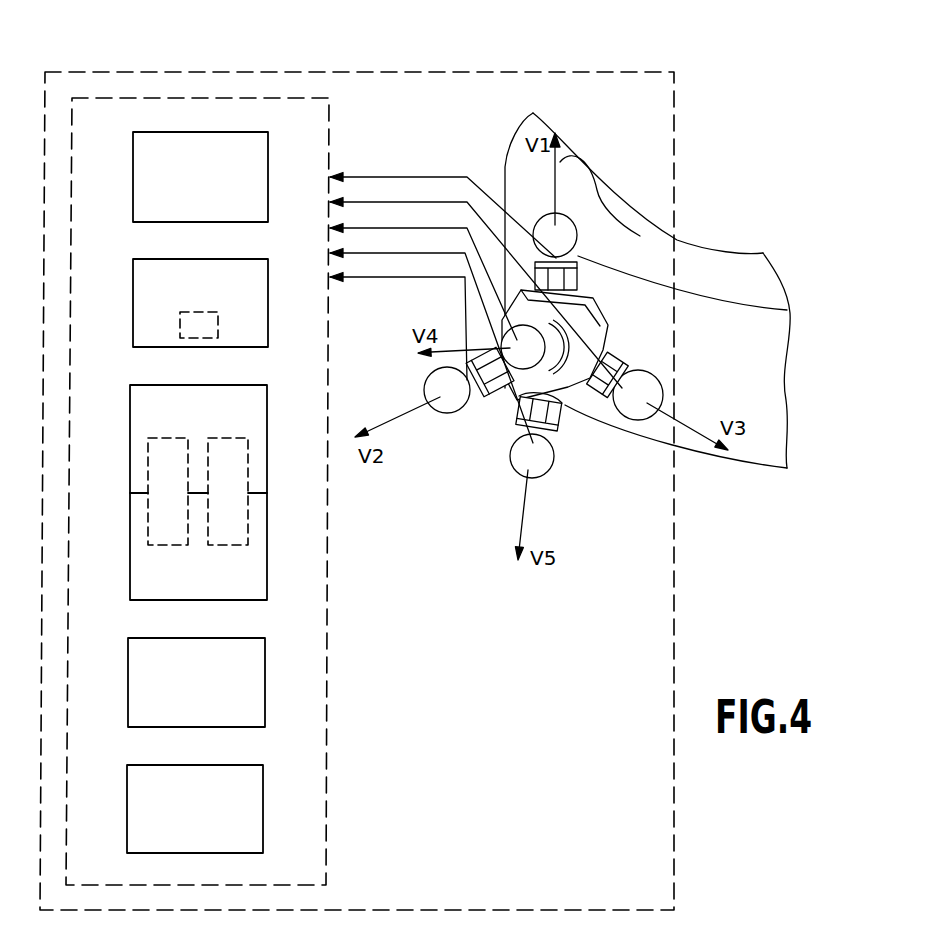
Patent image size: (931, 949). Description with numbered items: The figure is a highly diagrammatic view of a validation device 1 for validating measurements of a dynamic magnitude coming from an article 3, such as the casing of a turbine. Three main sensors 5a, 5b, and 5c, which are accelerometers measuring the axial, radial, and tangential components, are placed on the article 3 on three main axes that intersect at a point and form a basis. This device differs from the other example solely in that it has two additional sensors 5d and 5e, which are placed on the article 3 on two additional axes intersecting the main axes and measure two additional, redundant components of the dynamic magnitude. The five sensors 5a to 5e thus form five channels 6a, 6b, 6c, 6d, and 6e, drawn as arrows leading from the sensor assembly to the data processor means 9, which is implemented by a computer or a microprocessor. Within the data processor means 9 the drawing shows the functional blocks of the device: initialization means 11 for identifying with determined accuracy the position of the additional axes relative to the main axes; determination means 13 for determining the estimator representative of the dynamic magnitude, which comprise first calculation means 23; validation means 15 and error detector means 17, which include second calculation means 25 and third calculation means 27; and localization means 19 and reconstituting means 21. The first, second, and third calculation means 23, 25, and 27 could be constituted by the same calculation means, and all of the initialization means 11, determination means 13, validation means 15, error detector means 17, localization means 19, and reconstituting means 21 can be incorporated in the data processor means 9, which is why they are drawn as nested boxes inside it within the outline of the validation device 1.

The validation device 1 is at (217, 72).
The article 3 is at (710, 257).
The main sensor 5a is at (564, 245).
The main sensor 5b is at (452, 403).
The main sensor 5c is at (637, 388).
The additional sensor 5d is at (518, 338).
The additional sensor 5e is at (520, 456).
The channel 6a is at (406, 177).
The channel 6b is at (406, 277).
The channel 6c is at (406, 202).
The channel 6d is at (406, 228).
The channel 6e is at (406, 253).
The data processor means 9 is at (331, 131).
The initialization means 11 is at (250, 160).
The determination means 13 is at (248, 290).
The validation means 15 is at (250, 413).
The error detector means 17 is at (248, 572).
The localization means 19 is at (245, 668).
The reconstituting means 21 is at (245, 797).
The first calculation means 23 is at (205, 328).
The second calculation means 25 is at (155, 452).
The third calculation means 27 is at (243, 452).